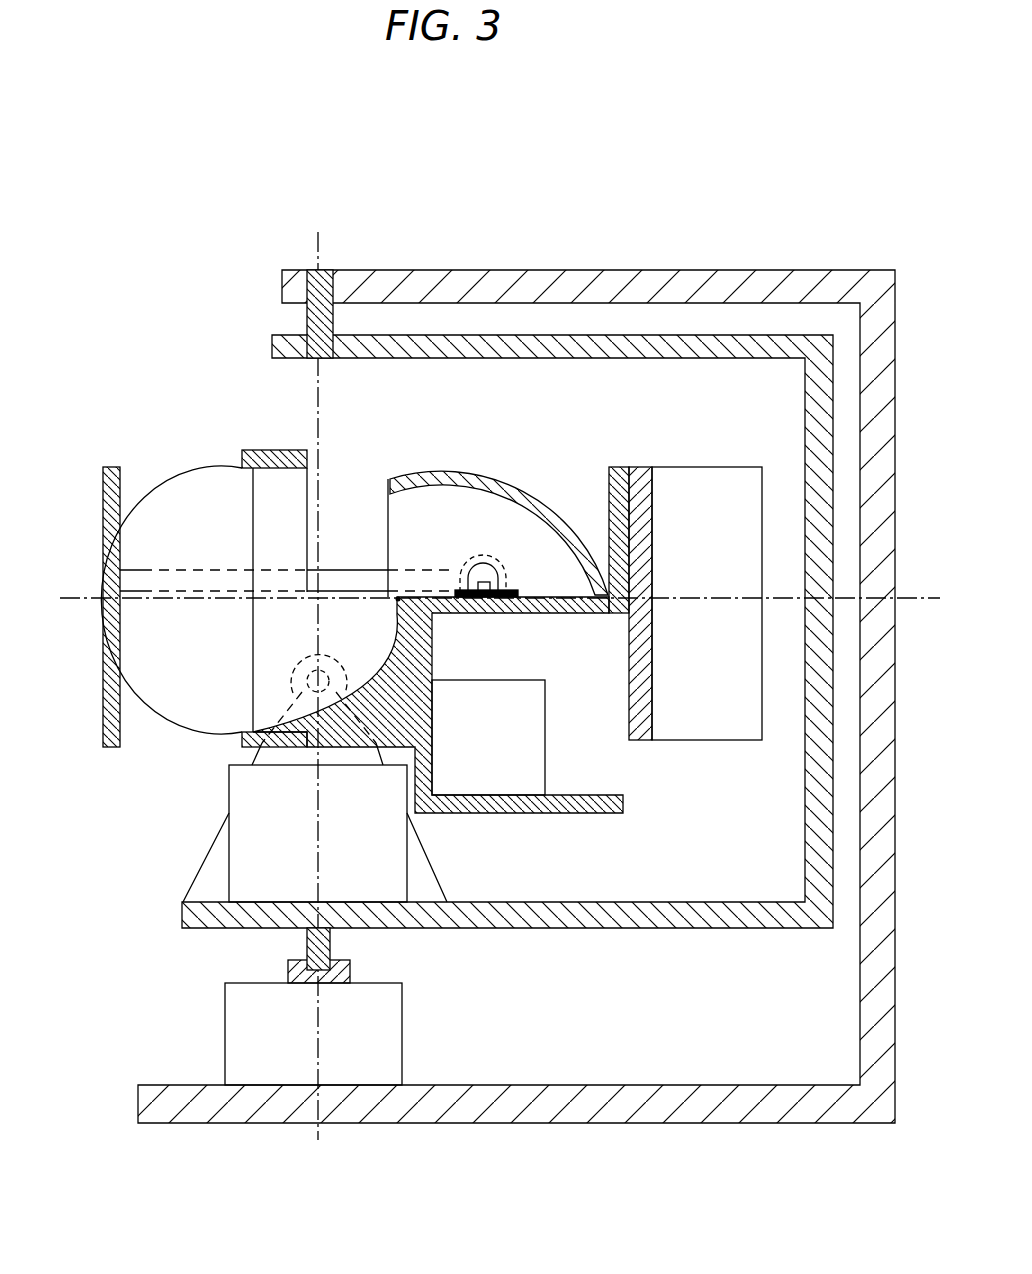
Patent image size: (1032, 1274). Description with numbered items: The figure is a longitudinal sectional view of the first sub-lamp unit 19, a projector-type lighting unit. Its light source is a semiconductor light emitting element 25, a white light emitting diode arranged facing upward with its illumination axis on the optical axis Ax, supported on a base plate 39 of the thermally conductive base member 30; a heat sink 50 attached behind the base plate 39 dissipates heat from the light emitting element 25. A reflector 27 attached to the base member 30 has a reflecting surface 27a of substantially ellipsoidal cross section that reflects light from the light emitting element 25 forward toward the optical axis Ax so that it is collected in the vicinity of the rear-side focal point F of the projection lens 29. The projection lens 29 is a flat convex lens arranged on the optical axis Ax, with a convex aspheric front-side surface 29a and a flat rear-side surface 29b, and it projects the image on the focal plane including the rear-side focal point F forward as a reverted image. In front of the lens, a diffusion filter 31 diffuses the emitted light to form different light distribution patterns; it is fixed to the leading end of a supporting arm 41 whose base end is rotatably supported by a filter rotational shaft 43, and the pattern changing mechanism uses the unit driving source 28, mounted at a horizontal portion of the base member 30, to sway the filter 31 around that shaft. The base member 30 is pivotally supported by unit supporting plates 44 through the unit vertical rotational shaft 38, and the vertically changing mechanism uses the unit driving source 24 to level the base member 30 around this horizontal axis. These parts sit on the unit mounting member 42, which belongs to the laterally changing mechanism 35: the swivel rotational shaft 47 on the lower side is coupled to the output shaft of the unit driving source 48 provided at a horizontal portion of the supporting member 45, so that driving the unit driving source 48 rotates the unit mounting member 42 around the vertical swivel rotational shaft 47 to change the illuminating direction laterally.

The first sub-lamp unit 19 is at (201, 385).
The unit driving source 24 is at (253, 861).
The semiconductor light emitting element 25 is at (506, 569).
The reflector 27 is at (490, 489).
The reflecting surface 27a is at (372, 520).
The unit driving source 28 is at (515, 742).
The projection lens 29 is at (208, 587).
The front-side surface 29a is at (176, 690).
The rear-side surface 29b is at (254, 668).
The base member 30 is at (438, 705).
The diffusion filter 31 is at (103, 492).
The laterally changing mechanism 35 is at (235, 963).
The unit vertical rotational shaft 38 is at (337, 683).
The base plate 39 is at (586, 613).
The supporting arm 41 is at (330, 577).
The unit mounting member 42 is at (666, 931).
The filter rotational shaft 43 is at (500, 558).
The unit supporting plate 44 is at (244, 750).
The supporting member 45 is at (736, 266).
The swivel rotational shaft 47 is at (307, 312).
The unit driving source 48 is at (372, 1050).
The heat sink 50 is at (717, 465).
The rear-side focal point F is at (396, 600).
The optical axis Ax is at (80, 594).